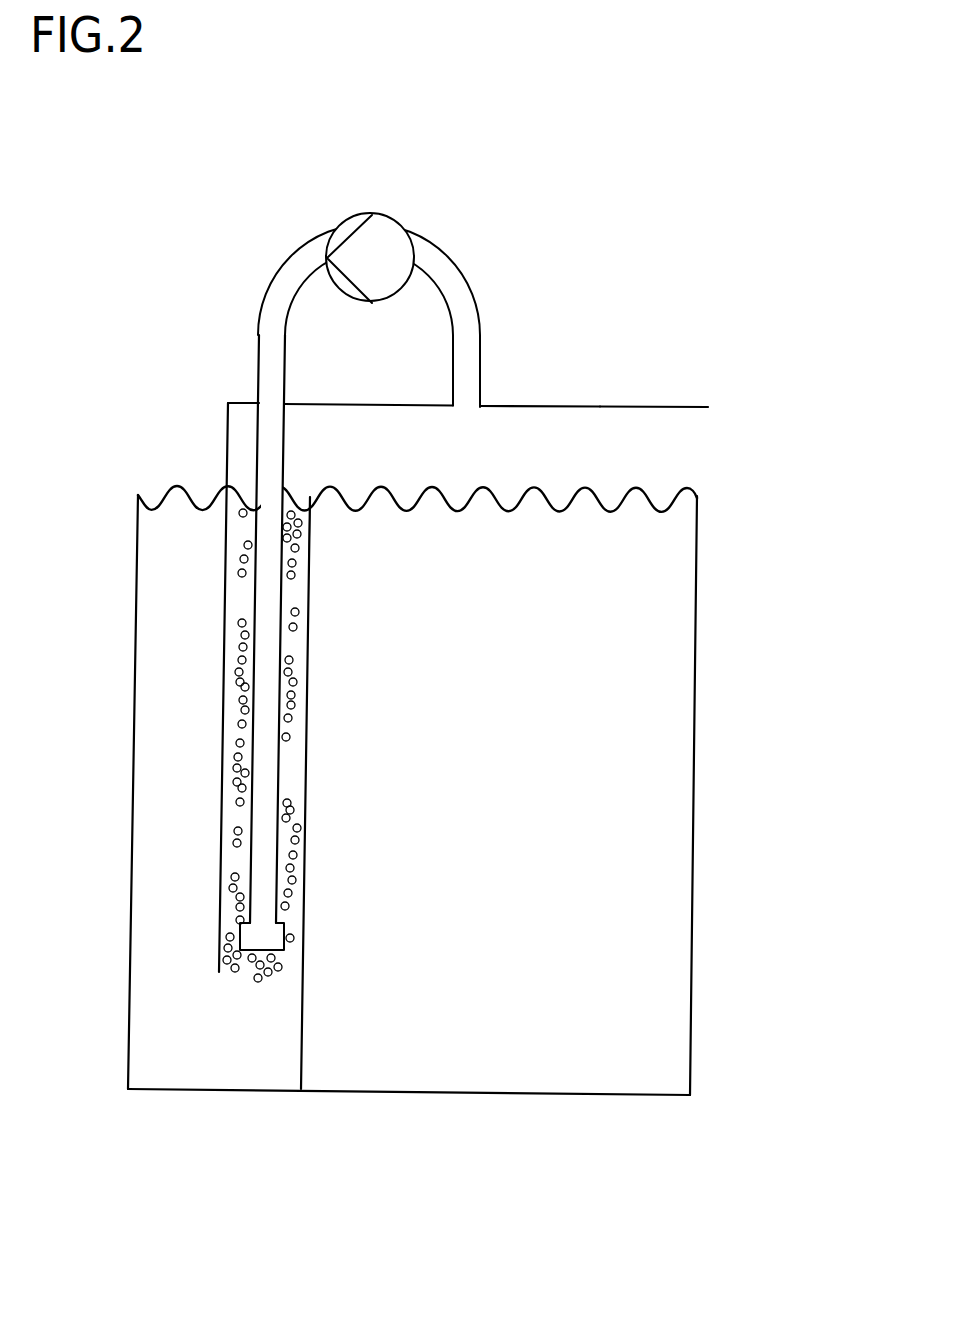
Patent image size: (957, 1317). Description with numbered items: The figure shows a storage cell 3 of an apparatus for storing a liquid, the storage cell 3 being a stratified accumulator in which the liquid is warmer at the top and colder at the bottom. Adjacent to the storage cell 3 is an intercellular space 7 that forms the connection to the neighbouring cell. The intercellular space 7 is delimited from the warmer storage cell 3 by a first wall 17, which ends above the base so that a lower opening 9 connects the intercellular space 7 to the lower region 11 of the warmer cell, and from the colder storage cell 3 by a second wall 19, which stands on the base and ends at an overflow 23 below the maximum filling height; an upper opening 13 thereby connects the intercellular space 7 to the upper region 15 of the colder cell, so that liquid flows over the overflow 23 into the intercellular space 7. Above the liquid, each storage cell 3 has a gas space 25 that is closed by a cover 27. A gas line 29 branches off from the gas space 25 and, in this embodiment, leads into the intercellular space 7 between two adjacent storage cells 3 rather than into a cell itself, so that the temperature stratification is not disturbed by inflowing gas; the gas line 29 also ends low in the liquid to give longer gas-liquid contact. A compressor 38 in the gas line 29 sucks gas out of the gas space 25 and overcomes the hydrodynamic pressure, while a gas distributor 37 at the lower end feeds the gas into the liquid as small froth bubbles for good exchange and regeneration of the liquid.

The storage cell 3 is at (408, 812).
The intercellular space 7 is at (242, 660).
The lower opening 9 is at (178, 1067).
The lower region 11 is at (130, 996).
The upper opening 13 is at (260, 735).
The upper region 15 is at (688, 541).
The first wall 17 is at (174, 642).
The second wall 19 is at (302, 1003).
The overflow 23 is at (307, 507).
The gas space 25 is at (643, 440).
The cover 27 is at (575, 404).
The gas line 29 is at (477, 309).
The gas distributor 37 is at (252, 942).
The compressor 38 is at (393, 218).